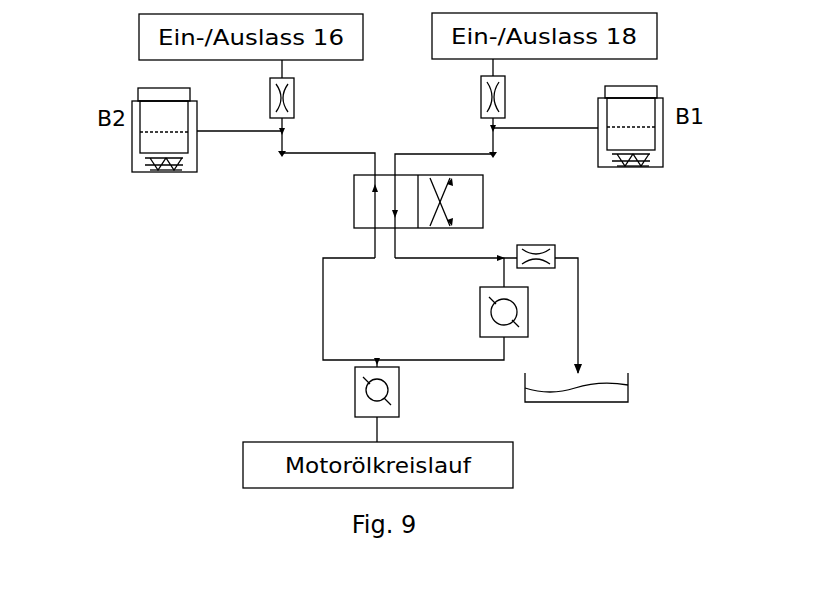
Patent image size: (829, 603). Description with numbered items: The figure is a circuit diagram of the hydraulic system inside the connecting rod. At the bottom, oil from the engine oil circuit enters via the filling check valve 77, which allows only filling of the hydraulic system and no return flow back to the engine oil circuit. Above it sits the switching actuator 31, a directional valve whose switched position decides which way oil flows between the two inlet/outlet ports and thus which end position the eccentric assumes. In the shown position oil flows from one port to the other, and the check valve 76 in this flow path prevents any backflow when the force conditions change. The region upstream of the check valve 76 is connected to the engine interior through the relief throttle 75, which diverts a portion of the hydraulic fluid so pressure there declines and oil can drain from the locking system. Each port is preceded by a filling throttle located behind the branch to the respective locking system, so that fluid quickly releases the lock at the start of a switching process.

The switching actuator 31 is at (353, 203).
The relief throttle 75 is at (556, 253).
The check valve 76 is at (528, 308).
The filling check valve 77 is at (355, 392).